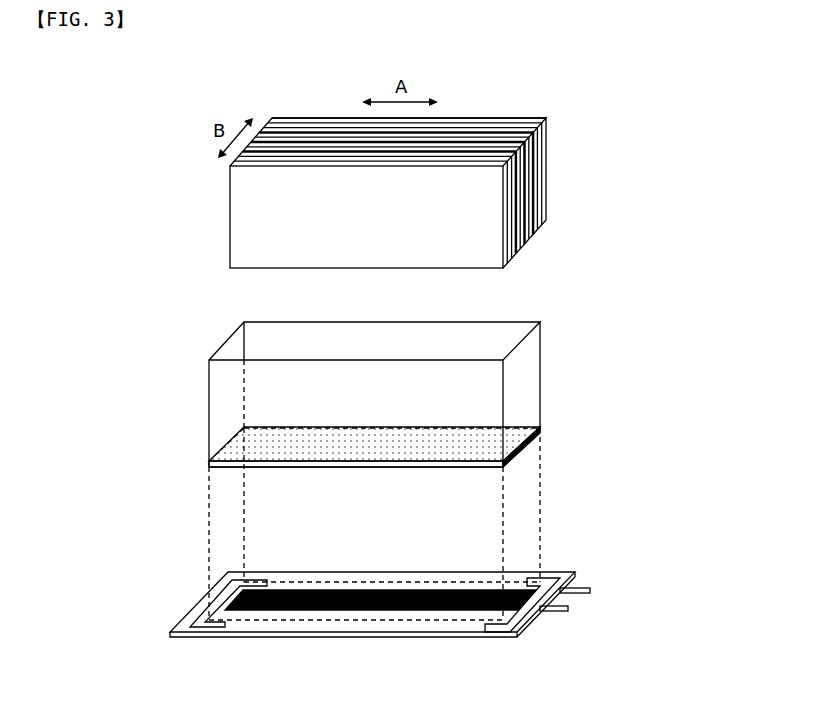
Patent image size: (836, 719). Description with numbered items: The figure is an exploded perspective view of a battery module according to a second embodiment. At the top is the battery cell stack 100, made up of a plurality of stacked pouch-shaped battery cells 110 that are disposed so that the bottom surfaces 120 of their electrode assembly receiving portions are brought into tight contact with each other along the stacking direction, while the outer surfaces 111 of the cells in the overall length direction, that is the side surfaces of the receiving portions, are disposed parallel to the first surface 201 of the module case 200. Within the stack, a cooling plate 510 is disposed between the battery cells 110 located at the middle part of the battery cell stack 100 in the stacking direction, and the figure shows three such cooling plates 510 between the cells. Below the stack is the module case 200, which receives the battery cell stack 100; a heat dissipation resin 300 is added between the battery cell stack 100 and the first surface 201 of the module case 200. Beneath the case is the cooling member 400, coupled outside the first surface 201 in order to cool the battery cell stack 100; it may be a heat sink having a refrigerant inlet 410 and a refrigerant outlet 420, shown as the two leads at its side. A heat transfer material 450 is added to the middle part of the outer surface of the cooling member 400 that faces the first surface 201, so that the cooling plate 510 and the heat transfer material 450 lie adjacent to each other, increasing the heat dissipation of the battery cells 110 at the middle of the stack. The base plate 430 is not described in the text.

The battery cell stack 100 is at (450, 181).
The battery cell 110 is at (548, 124).
The outer surface 111 is at (457, 119).
The bottom surface 120 is at (265, 242).
The cooling plate 510 is at (322, 135).
The module case 200 is at (385, 471).
The first surface 201 is at (265, 488).
The heat dissipation resin 300 is at (515, 437).
The cooling member 400 is at (429, 605).
The refrigerant inlet 410 is at (592, 590).
The refrigerant outlet 420 is at (570, 607).
The substrate 430 is at (497, 622).
The heat transfer material 450 is at (325, 598).